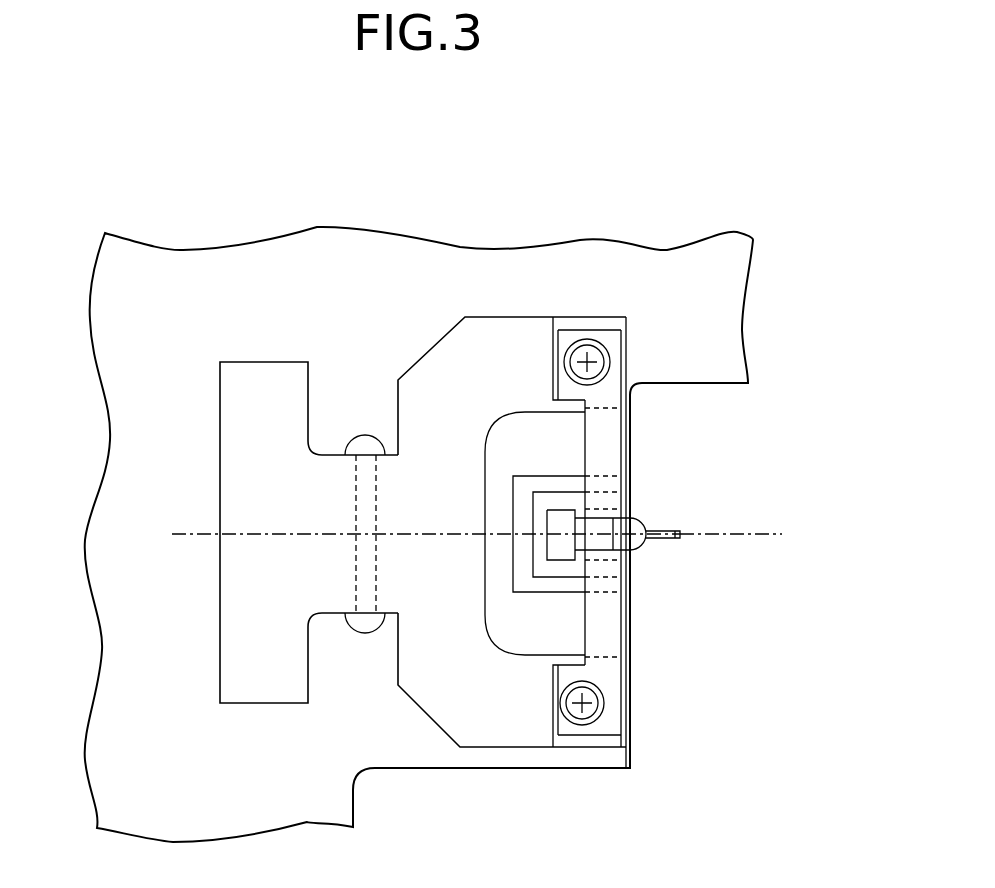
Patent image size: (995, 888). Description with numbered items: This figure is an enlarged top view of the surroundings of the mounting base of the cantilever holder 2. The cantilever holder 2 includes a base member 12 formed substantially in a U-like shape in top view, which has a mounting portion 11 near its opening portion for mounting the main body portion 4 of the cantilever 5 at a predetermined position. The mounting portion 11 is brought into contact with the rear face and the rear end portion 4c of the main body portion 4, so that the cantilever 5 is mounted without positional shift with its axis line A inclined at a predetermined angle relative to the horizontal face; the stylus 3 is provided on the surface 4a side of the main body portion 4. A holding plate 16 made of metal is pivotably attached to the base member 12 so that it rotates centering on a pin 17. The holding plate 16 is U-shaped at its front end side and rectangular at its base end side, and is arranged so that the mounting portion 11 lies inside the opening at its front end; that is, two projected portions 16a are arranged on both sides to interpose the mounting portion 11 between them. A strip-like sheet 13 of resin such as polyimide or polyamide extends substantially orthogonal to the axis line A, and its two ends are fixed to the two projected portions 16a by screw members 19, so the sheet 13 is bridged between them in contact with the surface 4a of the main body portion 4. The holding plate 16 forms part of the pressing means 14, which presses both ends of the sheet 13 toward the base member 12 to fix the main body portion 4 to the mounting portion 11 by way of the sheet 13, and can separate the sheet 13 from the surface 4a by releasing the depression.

The cantilever holder 2 is at (722, 264).
The stylus 3 is at (681, 530).
The main body portion 4 is at (641, 546).
The surface of the main body portion 4a is at (646, 518).
The rear end portion of the main body portion 4c is at (576, 512).
The cantilever 5 is at (658, 526).
The mounting portion 11 is at (558, 553).
The base member 12 is at (323, 805).
The sheet 13 is at (612, 430).
The pressing means 14 is at (283, 736).
The holding plate 16 is at (447, 711).
The projected portions 16a is at (530, 332).
The pin 17 is at (367, 625).
The screw members 19 is at (604, 360).
The axis line A is at (770, 535).